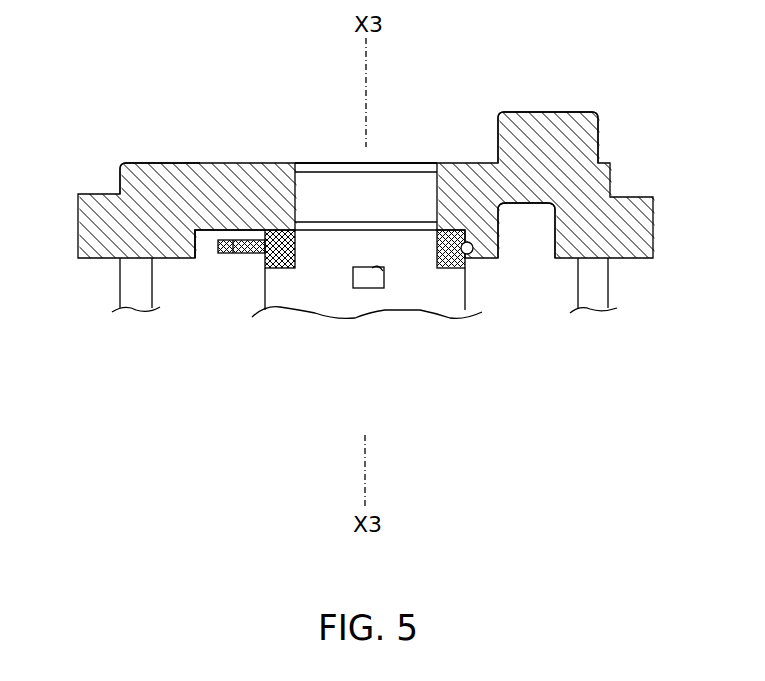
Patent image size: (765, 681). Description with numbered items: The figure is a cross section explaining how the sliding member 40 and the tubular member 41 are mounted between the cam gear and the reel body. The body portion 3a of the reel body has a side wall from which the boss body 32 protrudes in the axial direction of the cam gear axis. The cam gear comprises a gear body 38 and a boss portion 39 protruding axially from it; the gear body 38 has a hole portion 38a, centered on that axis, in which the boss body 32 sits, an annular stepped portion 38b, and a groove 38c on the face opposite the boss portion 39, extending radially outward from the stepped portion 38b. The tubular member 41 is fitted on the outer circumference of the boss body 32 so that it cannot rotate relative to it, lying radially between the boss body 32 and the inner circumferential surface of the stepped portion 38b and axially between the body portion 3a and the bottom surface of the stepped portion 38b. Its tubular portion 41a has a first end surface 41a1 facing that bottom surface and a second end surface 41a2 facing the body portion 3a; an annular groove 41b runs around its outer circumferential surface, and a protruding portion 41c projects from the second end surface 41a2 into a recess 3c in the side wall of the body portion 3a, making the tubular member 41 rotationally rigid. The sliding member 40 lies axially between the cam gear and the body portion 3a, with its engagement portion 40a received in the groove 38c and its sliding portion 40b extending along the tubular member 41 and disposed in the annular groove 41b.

The gear body 38 is at (240, 232).
The boss portion 39 is at (548, 112).
The sliding member 40 is at (197, 228).
The engagement portion 40a is at (163, 163).
The sliding portion 40b is at (490, 262).
The boss body 32 is at (343, 163).
The hole portion 38a is at (412, 163).
The stepped portion 38b is at (462, 254).
The groove 38c is at (196, 260).
The tubular member 41 is at (453, 268).
The tubular portion 41a is at (314, 268).
The first end surface 41a1 is at (248, 242).
The second end surface 41a2 is at (278, 268).
The annular groove 41b is at (233, 254).
The protruding portion 41c is at (372, 278).
The body portion 3a is at (133, 310).
The recess 3c is at (383, 271).